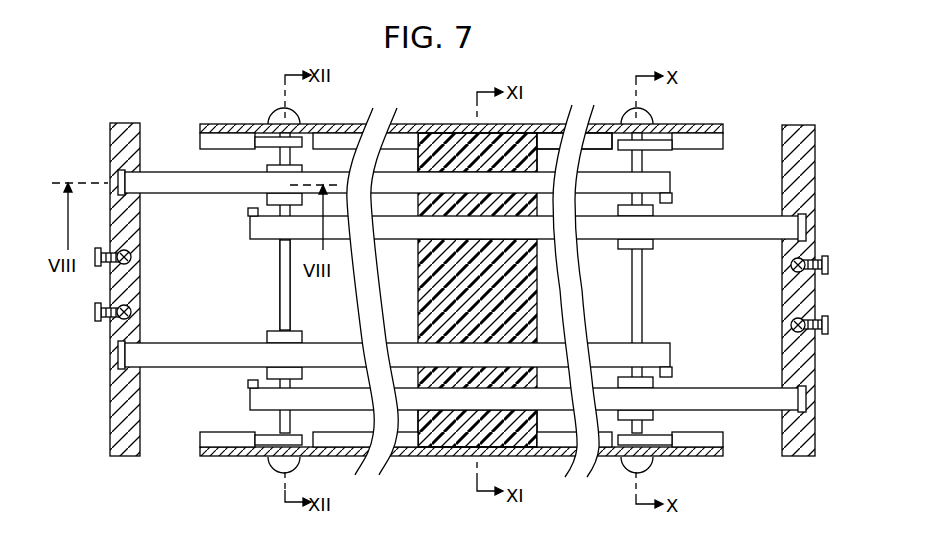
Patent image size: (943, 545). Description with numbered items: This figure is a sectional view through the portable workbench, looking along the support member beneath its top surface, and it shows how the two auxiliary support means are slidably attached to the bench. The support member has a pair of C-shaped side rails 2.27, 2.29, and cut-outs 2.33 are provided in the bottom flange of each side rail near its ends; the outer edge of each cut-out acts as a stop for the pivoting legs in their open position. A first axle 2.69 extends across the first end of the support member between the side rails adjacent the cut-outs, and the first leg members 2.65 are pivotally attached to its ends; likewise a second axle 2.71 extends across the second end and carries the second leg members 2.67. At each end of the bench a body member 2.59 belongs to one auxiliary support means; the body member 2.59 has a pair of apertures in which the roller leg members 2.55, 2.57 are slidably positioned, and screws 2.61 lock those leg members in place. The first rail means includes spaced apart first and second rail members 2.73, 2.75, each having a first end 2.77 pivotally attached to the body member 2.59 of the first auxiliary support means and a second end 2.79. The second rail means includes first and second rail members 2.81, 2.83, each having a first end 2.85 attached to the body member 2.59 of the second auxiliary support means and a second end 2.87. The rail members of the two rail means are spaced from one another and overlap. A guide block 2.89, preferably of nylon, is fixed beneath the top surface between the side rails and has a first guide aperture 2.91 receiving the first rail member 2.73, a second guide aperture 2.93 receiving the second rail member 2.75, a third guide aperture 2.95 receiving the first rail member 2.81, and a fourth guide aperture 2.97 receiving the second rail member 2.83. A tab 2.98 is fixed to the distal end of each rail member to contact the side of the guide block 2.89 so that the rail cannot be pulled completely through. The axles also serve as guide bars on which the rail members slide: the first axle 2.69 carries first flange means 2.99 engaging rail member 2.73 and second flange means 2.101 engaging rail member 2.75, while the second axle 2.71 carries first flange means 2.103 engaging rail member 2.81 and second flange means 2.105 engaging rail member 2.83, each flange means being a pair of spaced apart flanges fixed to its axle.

The second flange means 2.105 is at (272, 188).
The second rail member 2.83 is at (102, 272).
The first rail member 2.81 is at (165, 357).
The second leg members 2.67 is at (263, 147).
The cut-outs 2.33 is at (598, 500).
The fourth guide aperture 2.97 is at (464, 170).
The side rail 2.29 is at (492, 128).
The guide block 2.89 is at (592, 82).
The second end 2.87 is at (672, 174).
The first leg members 2.65 is at (680, 122).
The second rail member 2.75 is at (793, 291).
The first rail member 2.73 is at (822, 489).
The first end 2.85 is at (118, 180).
The tab 2.98 is at (250, 211).
The second end 2.79 is at (252, 228).
The leg member 2.57 is at (140, 258).
The second axle 2.71 is at (280, 285).
The first axle 2.69 is at (643, 322).
The screws 2.61 is at (100, 262).
The leg member 2.55 is at (140, 312).
The second guide aperture 2.93 is at (307, 317).
The third guide aperture 2.95 is at (314, 287).
The first flange means 2.103 is at (272, 370).
The second flange means 2.101 is at (645, 230).
The body member 2.59 is at (457, 290).
The side rail 2.27 is at (462, 388).
The first guide aperture 2.91 is at (478, 402).
The first flange means 2.99 is at (767, 403).
The first end 2.77 is at (621, 361).